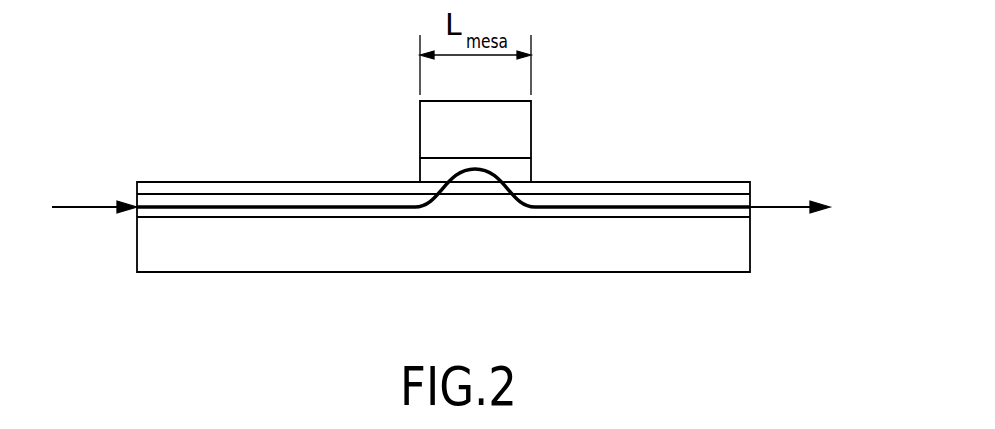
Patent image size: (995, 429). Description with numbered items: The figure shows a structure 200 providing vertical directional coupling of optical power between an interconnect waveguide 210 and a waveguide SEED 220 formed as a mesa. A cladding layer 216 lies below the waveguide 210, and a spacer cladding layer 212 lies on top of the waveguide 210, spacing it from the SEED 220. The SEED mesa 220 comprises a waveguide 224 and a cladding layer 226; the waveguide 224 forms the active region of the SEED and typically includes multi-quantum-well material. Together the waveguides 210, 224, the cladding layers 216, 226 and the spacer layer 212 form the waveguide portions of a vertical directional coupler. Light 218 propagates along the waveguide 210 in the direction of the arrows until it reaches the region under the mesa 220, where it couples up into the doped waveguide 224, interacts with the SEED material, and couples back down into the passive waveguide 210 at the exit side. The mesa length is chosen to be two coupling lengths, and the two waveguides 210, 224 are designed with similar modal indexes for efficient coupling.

The optical device 200 is at (458, 174).
The waveguide 210 is at (475, 205).
The spacer cladding layer 212 is at (750, 182).
The cladding layer 216 is at (750, 255).
The light 218 is at (830, 207).
The waveguide SEED 220 is at (480, 141).
The waveguide 224 is at (531, 170).
The cladding layer 226 is at (531, 133).